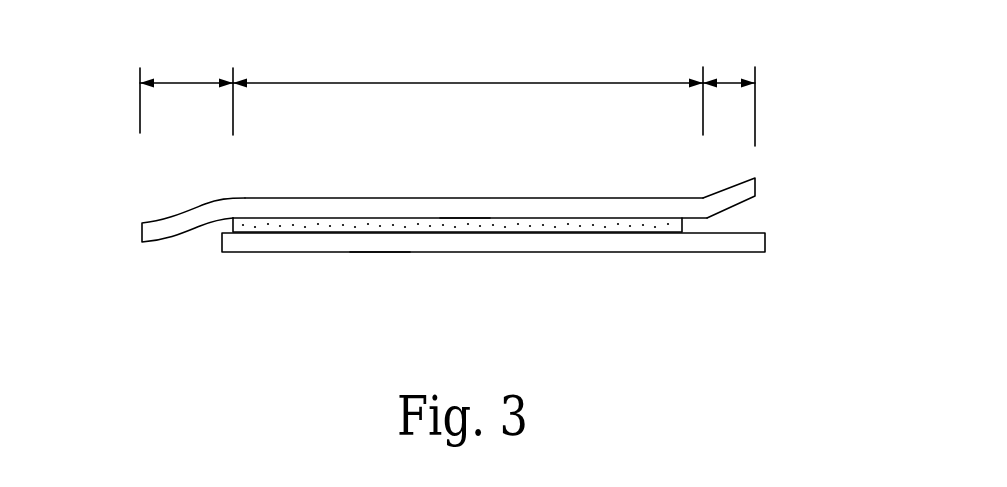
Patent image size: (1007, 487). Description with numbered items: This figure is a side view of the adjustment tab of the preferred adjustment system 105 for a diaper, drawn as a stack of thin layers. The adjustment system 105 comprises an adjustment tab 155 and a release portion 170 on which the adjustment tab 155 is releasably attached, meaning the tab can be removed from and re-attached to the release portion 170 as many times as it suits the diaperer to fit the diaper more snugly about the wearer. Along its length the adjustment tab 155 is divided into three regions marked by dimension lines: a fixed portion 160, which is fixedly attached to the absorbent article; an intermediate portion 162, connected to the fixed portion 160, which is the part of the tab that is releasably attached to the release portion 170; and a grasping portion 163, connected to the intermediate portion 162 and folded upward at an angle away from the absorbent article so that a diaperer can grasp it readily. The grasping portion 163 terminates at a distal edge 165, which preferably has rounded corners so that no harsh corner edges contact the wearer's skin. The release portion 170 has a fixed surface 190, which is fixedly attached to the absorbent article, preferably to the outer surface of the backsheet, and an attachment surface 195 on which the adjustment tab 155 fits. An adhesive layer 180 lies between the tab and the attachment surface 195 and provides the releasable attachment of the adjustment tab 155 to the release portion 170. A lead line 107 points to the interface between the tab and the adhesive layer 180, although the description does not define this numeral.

The adjustment system 105 is at (155, 194).
The interface between layers 107 is at (462, 218).
The adjustment tab 155 is at (531, 208).
The fixed portion 160 is at (187, 83).
The intermediate portion 162 is at (467, 83).
The grasping portion 163 is at (729, 82).
The distal edge 165 is at (757, 189).
The release portion 170 is at (723, 243).
The adhesive layer 180 is at (232, 224).
The fixed surface 190 is at (378, 252).
The attachment surface 195 is at (317, 232).